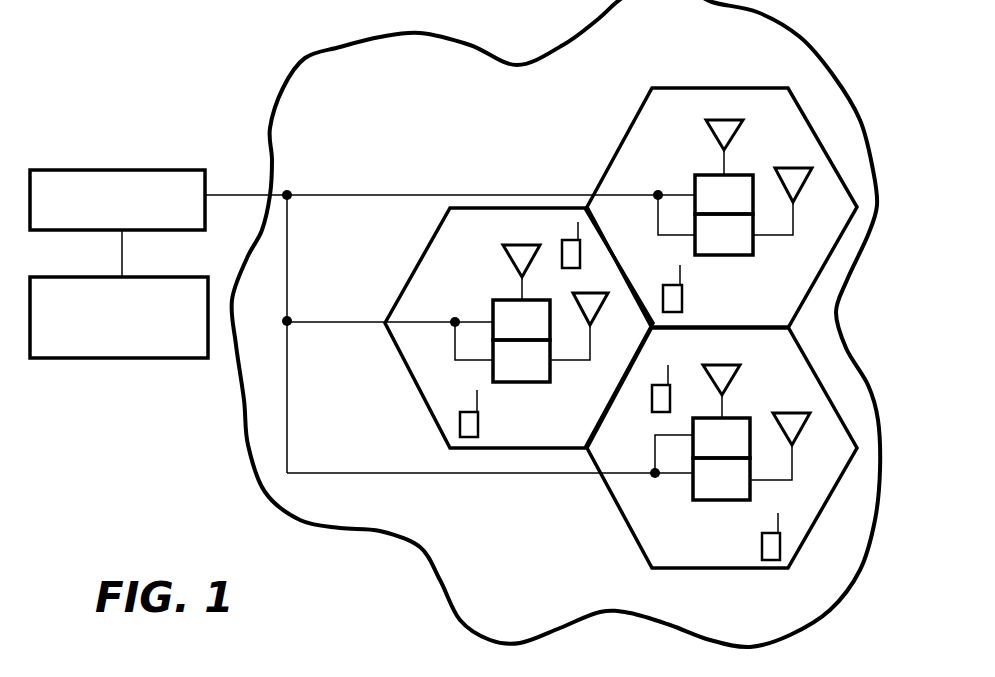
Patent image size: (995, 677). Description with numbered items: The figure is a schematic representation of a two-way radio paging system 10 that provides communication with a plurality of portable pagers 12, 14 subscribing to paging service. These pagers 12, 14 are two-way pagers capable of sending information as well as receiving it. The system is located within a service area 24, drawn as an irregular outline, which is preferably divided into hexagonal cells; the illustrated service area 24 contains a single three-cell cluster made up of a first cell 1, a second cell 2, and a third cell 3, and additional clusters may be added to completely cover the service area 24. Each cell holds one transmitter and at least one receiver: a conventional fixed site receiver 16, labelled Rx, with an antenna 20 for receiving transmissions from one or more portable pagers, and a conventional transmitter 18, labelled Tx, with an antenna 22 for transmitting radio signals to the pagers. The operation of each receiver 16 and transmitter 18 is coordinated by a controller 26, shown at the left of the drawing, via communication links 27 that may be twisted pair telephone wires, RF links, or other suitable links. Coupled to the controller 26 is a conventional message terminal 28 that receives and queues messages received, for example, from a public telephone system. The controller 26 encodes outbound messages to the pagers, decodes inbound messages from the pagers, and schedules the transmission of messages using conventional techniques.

The radio paging system 10 is at (270, 568).
The portable pager 12 is at (567, 235).
The portable pager 14 is at (480, 430).
The fixed site receiver 16 is at (550, 372).
The transmitter 18 is at (500, 300).
The receiver antenna 20 is at (603, 308).
The transmitter antenna 22 is at (520, 245).
The service area 24 is at (340, 47).
The controller 26 is at (100, 170).
The communication links 27 is at (327, 195).
The message terminal 28 is at (95, 277).
The first cell 1 is at (677, 559).
The second cell 2 is at (641, 181).
The third cell 3 is at (443, 306).